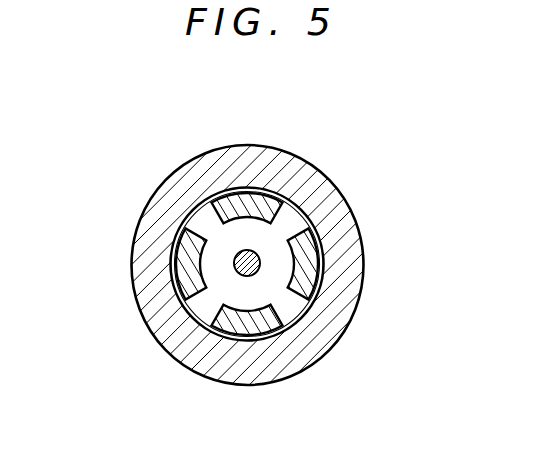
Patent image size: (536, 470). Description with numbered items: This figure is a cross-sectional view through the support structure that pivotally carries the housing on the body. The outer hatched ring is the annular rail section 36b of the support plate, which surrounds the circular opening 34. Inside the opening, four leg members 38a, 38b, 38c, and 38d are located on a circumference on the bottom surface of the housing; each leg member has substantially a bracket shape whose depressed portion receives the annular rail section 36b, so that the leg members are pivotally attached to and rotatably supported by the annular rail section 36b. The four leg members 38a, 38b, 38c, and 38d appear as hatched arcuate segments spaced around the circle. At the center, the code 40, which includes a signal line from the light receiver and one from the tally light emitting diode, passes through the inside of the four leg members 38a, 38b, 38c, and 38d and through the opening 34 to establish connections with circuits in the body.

The circular opening 34 is at (277, 235).
The annular rail section 36b is at (328, 322).
The leg member 38a is at (303, 263).
The leg member 38b is at (230, 328).
The leg member 38c is at (188, 270).
The leg member 38d is at (268, 202).
The code 40 is at (258, 273).